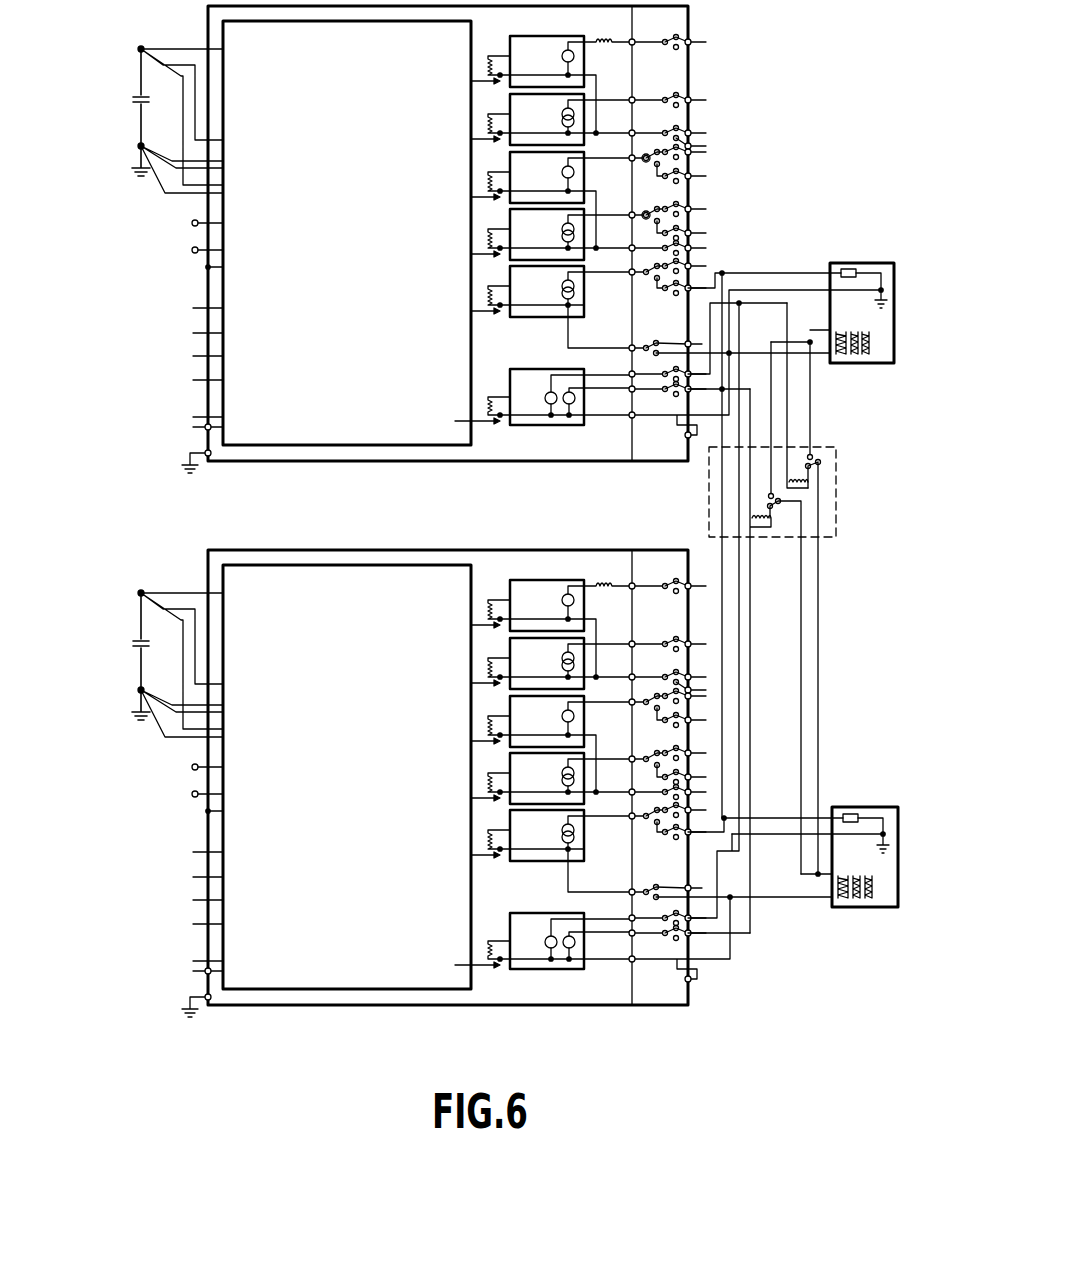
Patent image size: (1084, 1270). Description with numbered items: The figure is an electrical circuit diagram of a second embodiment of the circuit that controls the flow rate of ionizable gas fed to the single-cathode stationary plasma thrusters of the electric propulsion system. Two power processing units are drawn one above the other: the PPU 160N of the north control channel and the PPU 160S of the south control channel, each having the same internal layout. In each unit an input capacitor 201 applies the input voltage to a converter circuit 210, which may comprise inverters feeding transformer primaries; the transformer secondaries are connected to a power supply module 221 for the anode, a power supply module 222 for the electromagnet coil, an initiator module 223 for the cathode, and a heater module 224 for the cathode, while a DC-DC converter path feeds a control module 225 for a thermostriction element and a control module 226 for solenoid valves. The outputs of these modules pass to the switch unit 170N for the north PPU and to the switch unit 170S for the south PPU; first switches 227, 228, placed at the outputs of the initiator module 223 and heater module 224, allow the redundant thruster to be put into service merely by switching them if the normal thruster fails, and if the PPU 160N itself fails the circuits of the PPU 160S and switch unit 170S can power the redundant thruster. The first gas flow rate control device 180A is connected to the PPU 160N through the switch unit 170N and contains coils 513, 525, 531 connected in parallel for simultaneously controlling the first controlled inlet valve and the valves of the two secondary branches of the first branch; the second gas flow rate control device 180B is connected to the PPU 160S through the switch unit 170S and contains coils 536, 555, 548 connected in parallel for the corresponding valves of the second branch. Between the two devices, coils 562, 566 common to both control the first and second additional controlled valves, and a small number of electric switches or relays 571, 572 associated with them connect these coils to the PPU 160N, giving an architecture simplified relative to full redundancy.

The PPU 160N is at (290, 463).
The PPU 160S is at (290, 1007).
The switch unit 170N is at (683, 474).
The switch unit 170S is at (683, 1018).
The first gas flow rate control device 180A is at (834, 262).
The second gas flow rate control device 180B is at (855, 806).
The input capacitor 201 is at (130, 102).
The converter circuit 210 is at (366, 253).
The power supply module 221 is at (557, 42).
The power supply module 222 is at (520, 104).
The initiator module 223 is at (520, 162).
The heater module 224 is at (520, 219).
The control module 225 is at (520, 276).
The control module 226 is at (520, 379).
The first switch 227 is at (650, 150).
The first switch 228 is at (650, 212).
The coil 513 is at (840, 348).
The coil 525 is at (851, 355).
The coil 531 is at (870, 345).
The coil 536 is at (842, 892).
The coil 548 is at (874, 890).
The coil 555 is at (856, 899).
The coil 562 is at (812, 488).
The coil 566 is at (757, 530).
The relay 571 is at (822, 461).
The relay 572 is at (780, 505).